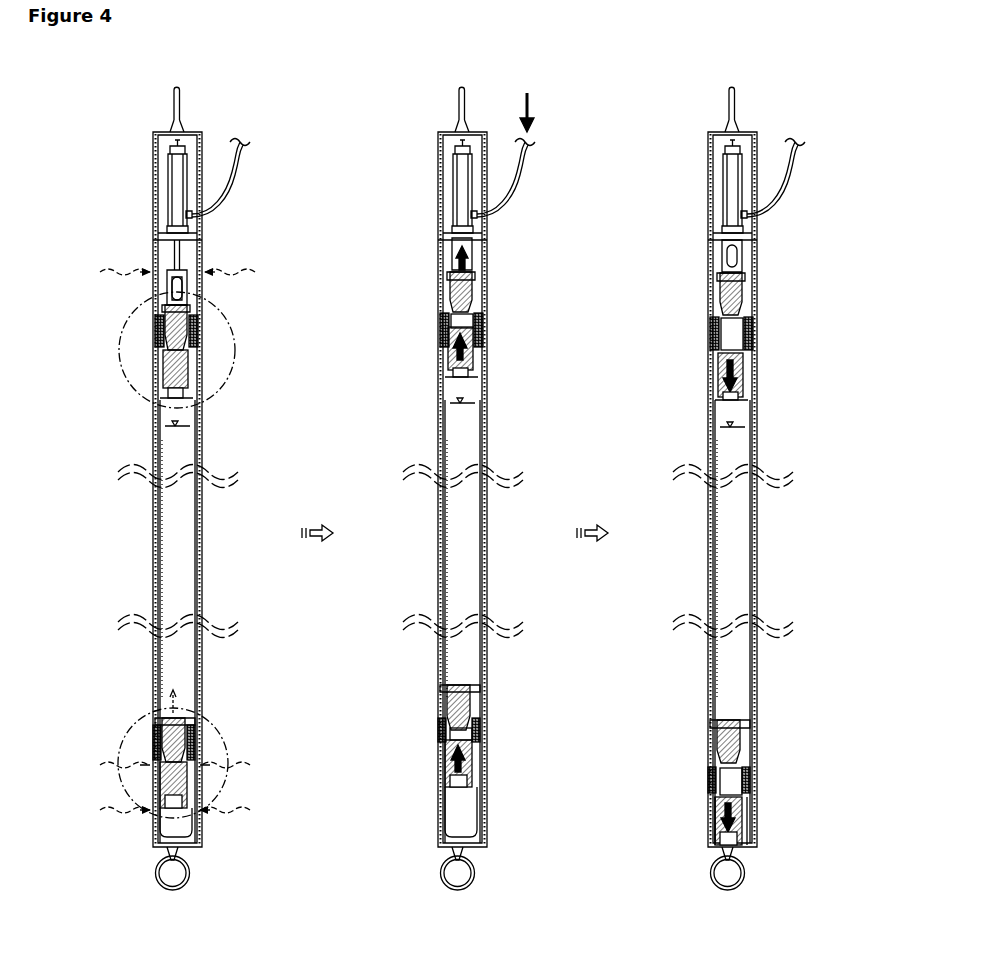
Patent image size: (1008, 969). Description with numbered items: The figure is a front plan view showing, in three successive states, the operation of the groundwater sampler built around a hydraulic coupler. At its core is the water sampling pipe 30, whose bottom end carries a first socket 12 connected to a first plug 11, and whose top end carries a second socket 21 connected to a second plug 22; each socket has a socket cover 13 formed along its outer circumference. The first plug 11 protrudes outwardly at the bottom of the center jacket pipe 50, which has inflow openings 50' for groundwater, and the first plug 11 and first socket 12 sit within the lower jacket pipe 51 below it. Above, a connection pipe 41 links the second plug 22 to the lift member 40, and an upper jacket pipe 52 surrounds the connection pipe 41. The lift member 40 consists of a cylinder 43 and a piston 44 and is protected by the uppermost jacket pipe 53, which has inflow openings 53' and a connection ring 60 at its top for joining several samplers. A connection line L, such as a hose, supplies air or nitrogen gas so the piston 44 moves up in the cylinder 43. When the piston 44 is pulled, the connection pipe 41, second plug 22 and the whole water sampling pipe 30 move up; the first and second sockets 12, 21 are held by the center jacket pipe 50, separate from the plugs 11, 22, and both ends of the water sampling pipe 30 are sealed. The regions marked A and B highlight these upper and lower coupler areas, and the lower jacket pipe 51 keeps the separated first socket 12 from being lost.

The first plug 11 is at (196, 725).
The first socket 12 is at (188, 782).
The socket cover 13 is at (160, 335).
The second socket 21 is at (190, 370).
The second plug 22 is at (196, 312).
The water sampling pipe 30 is at (196, 530).
The lift member 40 is at (66, 178).
The connection pipe 41 is at (200, 268).
The cylinder 43 is at (177, 183).
The piston 44 is at (160, 236).
The center jacket pipe 50 is at (399, 570).
The inflow openings 50' is at (397, 621).
The lower jacket pipe 51 is at (193, 832).
The upper jacket pipe 52 is at (153, 247).
The uppermost jacket pipe 53 is at (419, 481).
The inflow openings 53' is at (417, 488).
The connection ring 60 is at (180, 96).
The region A is at (218, 306).
The region B is at (212, 718).
The connection line L is at (240, 185).